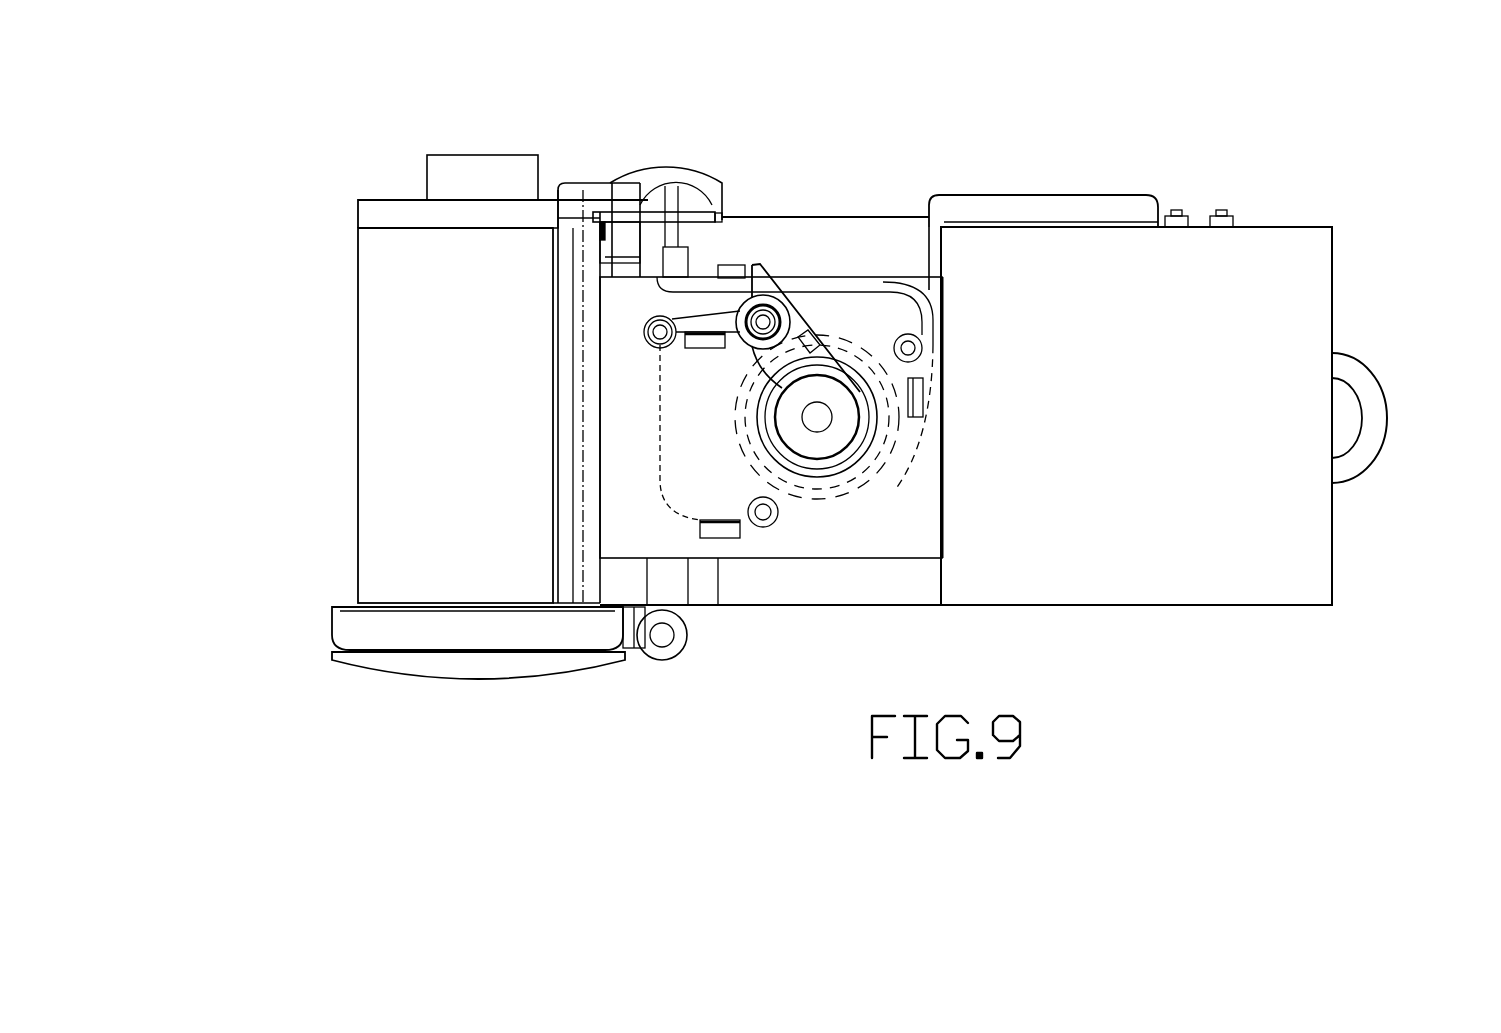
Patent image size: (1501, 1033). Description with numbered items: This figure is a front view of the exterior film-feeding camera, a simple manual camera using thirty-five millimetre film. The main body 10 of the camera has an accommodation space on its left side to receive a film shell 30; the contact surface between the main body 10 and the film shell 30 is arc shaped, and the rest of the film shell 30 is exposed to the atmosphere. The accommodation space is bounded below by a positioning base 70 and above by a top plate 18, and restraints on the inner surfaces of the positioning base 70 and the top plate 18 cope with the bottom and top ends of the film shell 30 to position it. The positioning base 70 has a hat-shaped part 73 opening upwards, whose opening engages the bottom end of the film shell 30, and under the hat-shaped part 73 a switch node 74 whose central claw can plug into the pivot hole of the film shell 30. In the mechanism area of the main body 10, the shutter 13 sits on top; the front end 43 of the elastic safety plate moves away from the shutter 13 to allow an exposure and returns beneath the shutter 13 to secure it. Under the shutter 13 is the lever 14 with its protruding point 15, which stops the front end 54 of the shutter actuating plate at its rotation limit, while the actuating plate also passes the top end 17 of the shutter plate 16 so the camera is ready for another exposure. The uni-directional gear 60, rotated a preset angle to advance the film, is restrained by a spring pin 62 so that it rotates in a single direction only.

The main body 10 is at (1280, 548).
The shutter 13 is at (652, 178).
The lever 14 is at (737, 262).
The protruding point 15 is at (770, 262).
The shutter plate 16 is at (800, 300).
The top end 17 is at (770, 280).
The top plate 18 is at (576, 190).
The film shell 30 is at (385, 435).
The front end 43 is at (662, 259).
The front end 54 is at (707, 216).
The uni-directional gear 60 is at (1040, 195).
The spring pin 62 is at (935, 245).
The positioning base 70 is at (588, 694).
The hat-shaped part 73 is at (346, 628).
The switch node 74 is at (478, 665).